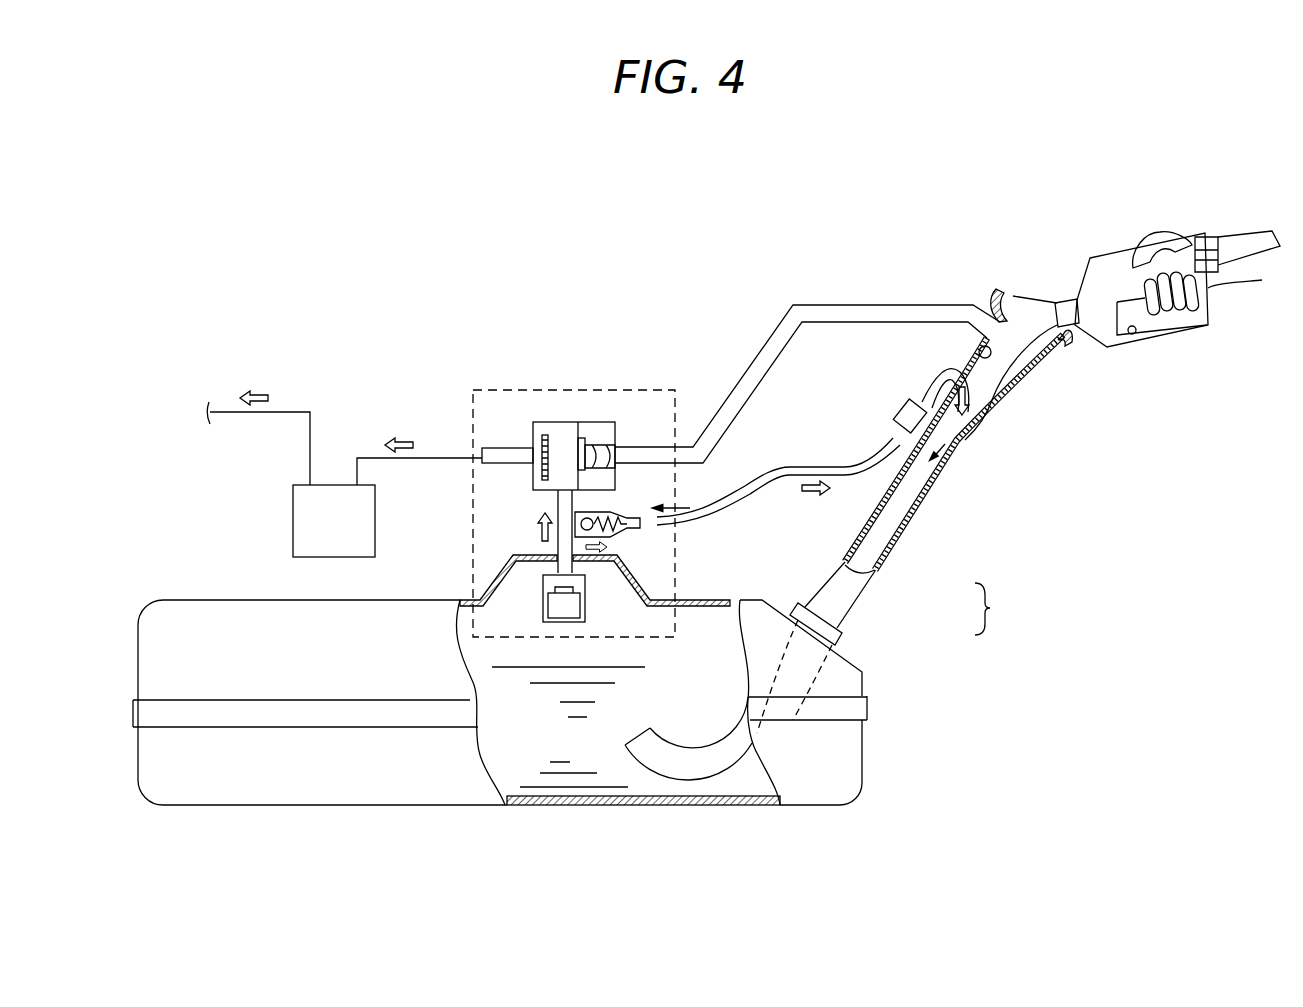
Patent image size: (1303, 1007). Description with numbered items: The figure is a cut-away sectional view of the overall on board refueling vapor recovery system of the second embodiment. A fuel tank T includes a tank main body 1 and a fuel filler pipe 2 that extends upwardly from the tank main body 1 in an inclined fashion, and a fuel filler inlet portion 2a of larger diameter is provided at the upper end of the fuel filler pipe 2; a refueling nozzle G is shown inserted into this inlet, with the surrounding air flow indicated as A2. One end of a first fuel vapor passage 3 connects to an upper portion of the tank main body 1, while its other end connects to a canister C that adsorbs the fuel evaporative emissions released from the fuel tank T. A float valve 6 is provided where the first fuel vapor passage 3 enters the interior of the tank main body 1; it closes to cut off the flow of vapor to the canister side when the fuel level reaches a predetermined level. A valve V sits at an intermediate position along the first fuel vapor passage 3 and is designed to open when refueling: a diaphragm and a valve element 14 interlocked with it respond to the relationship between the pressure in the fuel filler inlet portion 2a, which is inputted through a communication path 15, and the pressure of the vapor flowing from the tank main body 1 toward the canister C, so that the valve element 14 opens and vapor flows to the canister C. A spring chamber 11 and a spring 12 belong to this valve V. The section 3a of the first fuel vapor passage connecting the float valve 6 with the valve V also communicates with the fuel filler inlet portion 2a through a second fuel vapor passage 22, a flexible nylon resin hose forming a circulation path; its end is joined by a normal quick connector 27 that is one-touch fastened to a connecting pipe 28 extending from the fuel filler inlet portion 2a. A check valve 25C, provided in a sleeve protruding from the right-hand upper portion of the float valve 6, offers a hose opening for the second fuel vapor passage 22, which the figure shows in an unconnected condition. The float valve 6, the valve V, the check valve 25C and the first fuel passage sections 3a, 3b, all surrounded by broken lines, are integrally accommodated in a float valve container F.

The tank main body 1 is at (863, 683).
The fuel filler pipe 2 is at (863, 602).
The fuel filler inlet portion 2a is at (1020, 380).
The fuel tank T is at (994, 609).
The first fuel vapor passage 3 is at (428, 475).
The first fuel vapor passage section 3a is at (560, 510).
The first fuel vapor passage section 3b is at (503, 462).
The float valve 6 is at (525, 597).
The spring chamber 11 is at (597, 477).
The spring 12 is at (603, 443).
The valve element 14 is at (550, 424).
The communication path 15 is at (757, 353).
The second fuel vapor passage 22 is at (847, 467).
The check valve 25C is at (627, 532).
The quick connector 27 is at (905, 404).
The connecting pipe 28 is at (945, 380).
The air flow A2 is at (998, 494).
The canister C is at (335, 455).
The float valve container F is at (658, 390).
The fuel nozzle G is at (1098, 240).
The valve V is at (582, 408).